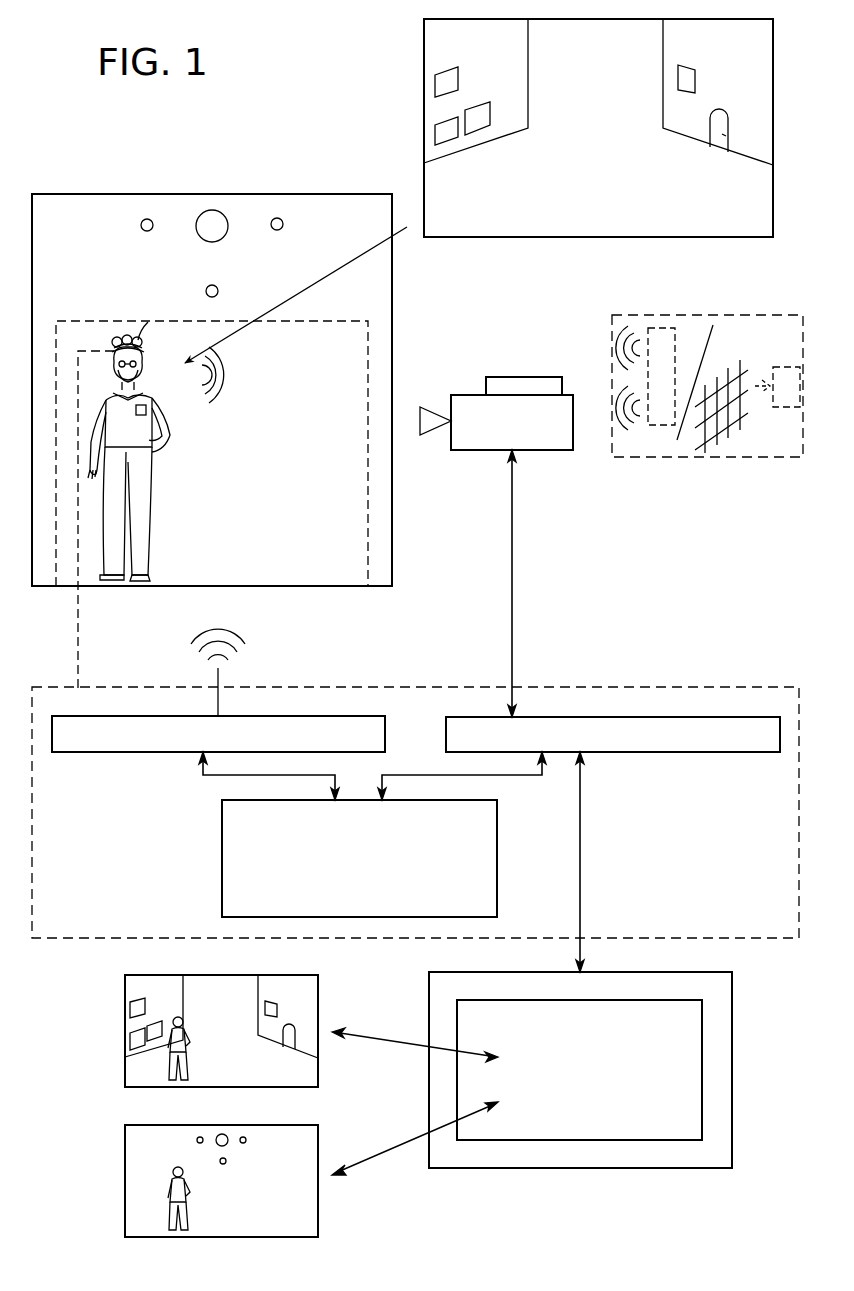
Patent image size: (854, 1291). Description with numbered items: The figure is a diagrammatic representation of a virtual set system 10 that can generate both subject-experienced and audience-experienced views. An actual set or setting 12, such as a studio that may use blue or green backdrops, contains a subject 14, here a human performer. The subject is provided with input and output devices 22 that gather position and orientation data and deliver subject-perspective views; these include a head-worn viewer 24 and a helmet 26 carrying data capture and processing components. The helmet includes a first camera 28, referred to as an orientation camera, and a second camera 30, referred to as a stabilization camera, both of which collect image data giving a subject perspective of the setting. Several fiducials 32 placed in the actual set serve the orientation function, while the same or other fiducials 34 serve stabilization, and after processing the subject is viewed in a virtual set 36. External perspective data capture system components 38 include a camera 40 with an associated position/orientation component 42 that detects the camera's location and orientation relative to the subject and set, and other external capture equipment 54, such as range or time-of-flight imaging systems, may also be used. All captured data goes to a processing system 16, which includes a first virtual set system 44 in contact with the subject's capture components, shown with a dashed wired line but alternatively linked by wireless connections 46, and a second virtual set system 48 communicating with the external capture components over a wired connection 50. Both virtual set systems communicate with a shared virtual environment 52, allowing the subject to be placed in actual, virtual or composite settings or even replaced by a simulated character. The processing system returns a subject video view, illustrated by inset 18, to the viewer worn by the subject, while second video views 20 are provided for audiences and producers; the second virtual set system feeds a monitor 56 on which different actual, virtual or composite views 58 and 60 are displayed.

The virtual set system 10 is at (72, 1134).
The actual set or setting 12 is at (212, 193).
The subject 14 is at (145, 520).
The processing system 16 is at (692, 686).
The subject video view 18 is at (423, 127).
The second video views 20 is at (92, 1178).
The input and output devices 22 is at (96, 342).
The head-worn viewer 24 is at (117, 368).
The helmet 26 is at (141, 352).
The first camera 28 is at (121, 336).
The second camera 30 is at (137, 338).
The fiducials 32 is at (141, 222).
The fiducials 34 is at (231, 211).
The virtual set 36 is at (56, 337).
The external image data capture system components 38 is at (468, 472).
The camera 40 is at (541, 451).
The position/orientation component 42 is at (524, 376).
The first virtual set system 44 is at (108, 753).
The wireless connection 46 is at (225, 378).
The second virtual set system 48 is at (688, 753).
The wired connection 50 is at (514, 590).
The shared virtual environment 52 is at (222, 862).
The external perspective data capture equipment 54 is at (708, 315).
The monitor 56 is at (732, 1068).
The composite view 58 is at (125, 1030).
The view 60 is at (318, 1202).